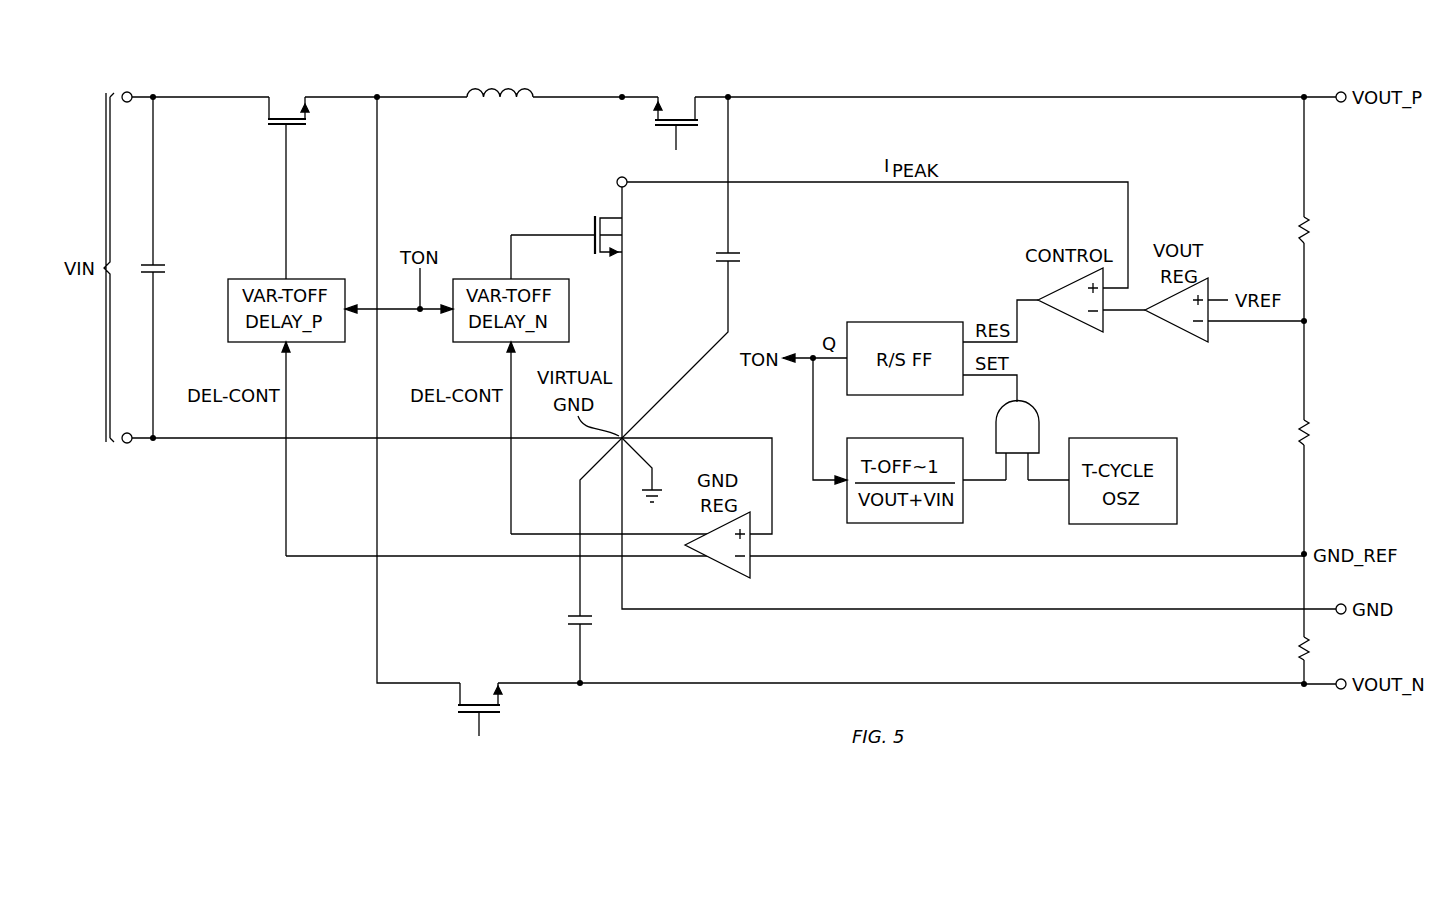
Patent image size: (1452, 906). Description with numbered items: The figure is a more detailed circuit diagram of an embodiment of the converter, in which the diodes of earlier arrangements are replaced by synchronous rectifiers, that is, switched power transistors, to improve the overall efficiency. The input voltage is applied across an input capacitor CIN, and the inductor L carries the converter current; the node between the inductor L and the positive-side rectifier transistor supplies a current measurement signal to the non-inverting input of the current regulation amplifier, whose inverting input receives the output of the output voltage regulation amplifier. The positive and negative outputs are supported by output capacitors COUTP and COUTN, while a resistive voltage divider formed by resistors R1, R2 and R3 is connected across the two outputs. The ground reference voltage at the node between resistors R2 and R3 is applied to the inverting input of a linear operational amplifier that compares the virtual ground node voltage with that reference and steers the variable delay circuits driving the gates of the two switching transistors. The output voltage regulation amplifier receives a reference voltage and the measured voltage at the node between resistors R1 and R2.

The input capacitor CIN is at (171, 266).
The inductor L is at (500, 78).
The positive output capacitor COUTP is at (693, 356).
The negative output capacitor COUTN is at (545, 647).
The resistor R1 is at (1319, 230).
The resistor R2 is at (1319, 432).
The resistor R3 is at (1319, 648).